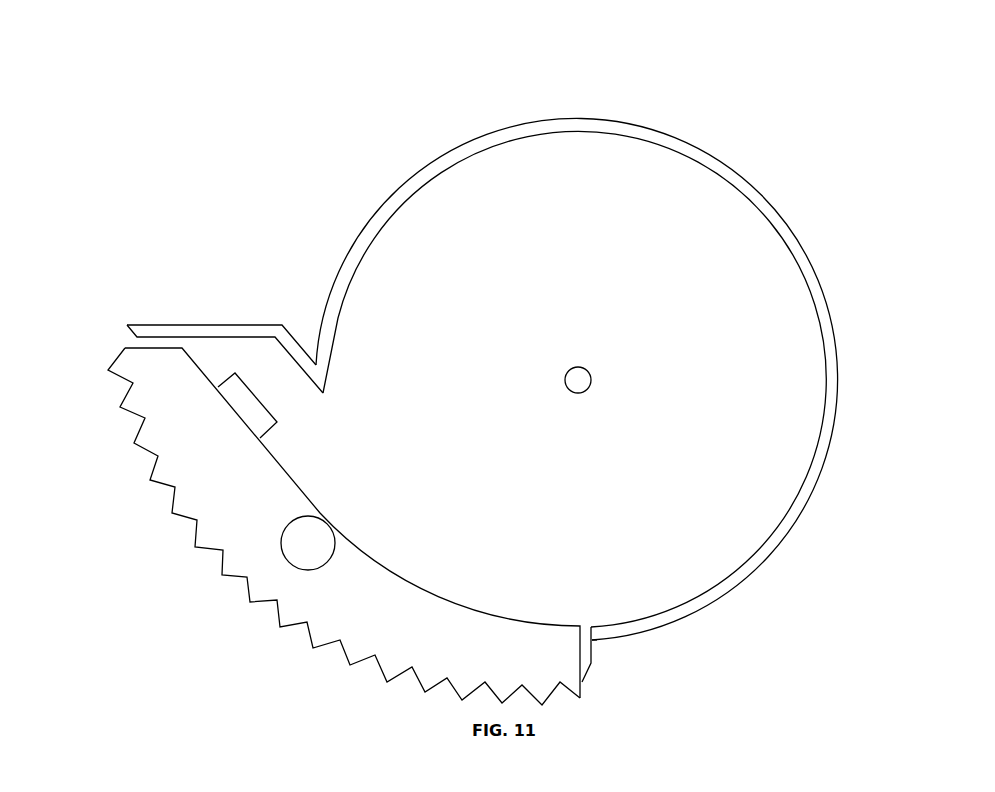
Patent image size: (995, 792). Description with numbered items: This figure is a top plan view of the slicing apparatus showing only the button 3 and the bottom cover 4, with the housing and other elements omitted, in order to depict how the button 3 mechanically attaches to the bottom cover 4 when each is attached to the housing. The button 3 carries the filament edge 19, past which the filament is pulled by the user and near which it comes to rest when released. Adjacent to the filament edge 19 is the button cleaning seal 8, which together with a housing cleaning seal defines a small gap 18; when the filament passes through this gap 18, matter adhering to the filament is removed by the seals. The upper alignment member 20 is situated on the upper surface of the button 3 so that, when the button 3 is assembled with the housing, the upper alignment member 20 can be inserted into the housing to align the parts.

The button 3 is at (183, 450).
The bottom cover 4 is at (680, 182).
The button cleaning seal 8 is at (238, 382).
The gap 18 is at (582, 687).
The filament edge 19 is at (137, 342).
The upper alignment member 20 is at (300, 552).